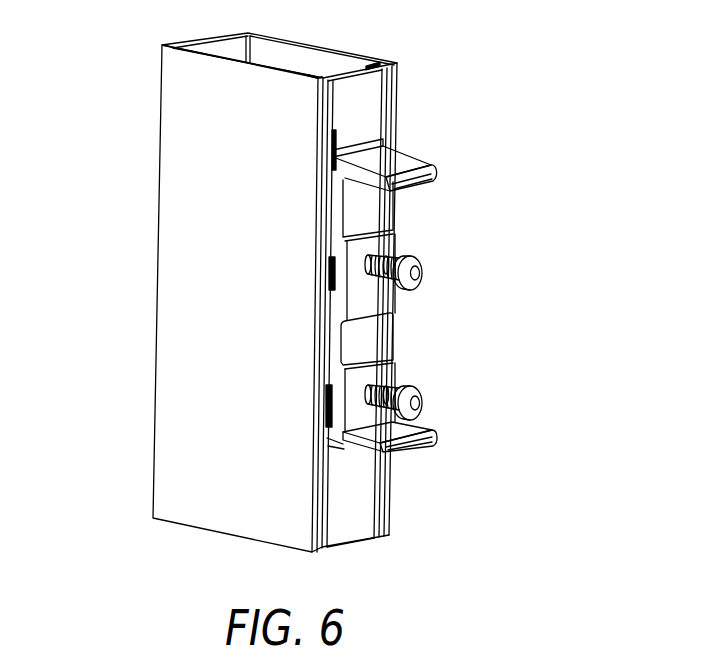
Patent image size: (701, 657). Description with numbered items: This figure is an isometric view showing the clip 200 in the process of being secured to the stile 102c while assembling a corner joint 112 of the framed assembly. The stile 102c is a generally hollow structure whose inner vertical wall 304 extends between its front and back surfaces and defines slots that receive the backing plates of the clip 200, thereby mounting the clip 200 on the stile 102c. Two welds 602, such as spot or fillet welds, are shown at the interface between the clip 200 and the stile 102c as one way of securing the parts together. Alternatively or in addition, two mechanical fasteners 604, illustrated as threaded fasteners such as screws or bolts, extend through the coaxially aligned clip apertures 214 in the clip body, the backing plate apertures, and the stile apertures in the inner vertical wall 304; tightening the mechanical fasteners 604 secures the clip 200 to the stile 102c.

The first stile 102c is at (156, 193).
The inner vertical wall 304 is at (362, 82).
The corner joint 112 is at (503, 95).
The clip 200 is at (426, 147).
The clip aperture 214 is at (386, 256).
The mechanical fastener 604 is at (422, 273).
The weld 602 is at (330, 213).